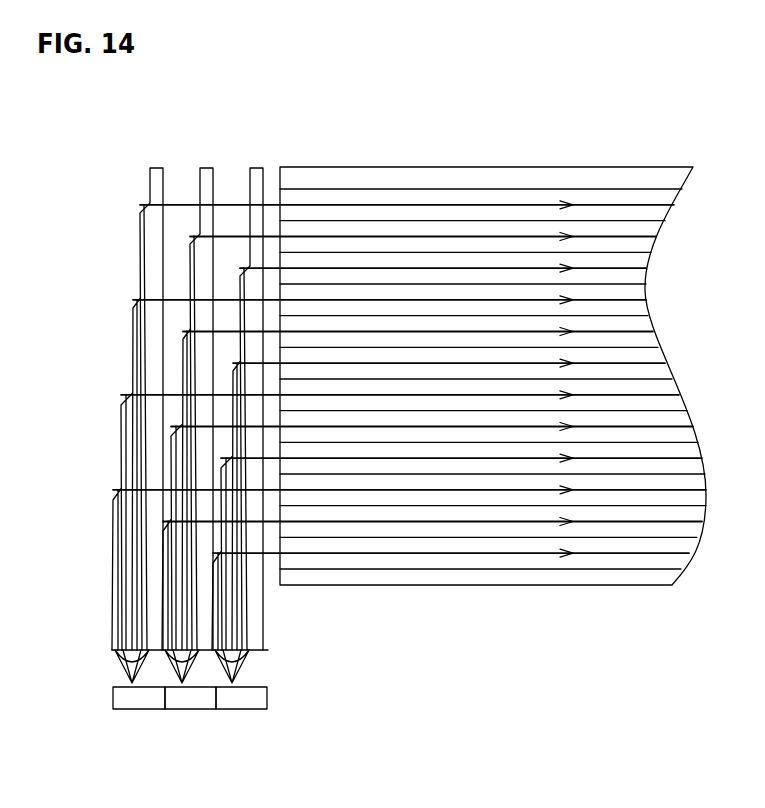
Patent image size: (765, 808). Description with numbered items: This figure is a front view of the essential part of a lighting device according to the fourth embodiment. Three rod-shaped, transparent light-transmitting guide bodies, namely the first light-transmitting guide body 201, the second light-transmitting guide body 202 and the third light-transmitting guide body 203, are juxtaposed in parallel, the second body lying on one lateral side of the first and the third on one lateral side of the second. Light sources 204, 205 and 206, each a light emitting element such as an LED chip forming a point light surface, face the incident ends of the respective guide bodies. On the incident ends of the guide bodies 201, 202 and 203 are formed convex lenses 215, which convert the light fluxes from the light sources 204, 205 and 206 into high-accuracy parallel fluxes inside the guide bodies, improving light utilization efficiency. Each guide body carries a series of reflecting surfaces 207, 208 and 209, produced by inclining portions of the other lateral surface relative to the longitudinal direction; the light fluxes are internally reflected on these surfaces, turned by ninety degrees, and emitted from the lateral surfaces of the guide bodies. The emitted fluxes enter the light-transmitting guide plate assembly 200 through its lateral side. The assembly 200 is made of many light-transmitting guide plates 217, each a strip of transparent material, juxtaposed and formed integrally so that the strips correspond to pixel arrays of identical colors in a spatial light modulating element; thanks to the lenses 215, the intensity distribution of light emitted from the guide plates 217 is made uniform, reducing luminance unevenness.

The light-transmitting guide plate assembly 200 is at (588, 585).
The first light-transmitting guide body 201 is at (160, 167).
The second light-transmitting guide body 202 is at (207, 167).
The third light-transmitting guide body 203 is at (260, 167).
The first light source 204 is at (135, 702).
The second light source 205 is at (190, 703).
The third light source 206 is at (237, 703).
The reflecting surface 207 is at (146, 207).
The reflecting surface 208 is at (192, 240).
The reflecting surface 209 is at (244, 271).
The convex lens 215 is at (114, 657).
The light-transmitting guide plate 217 is at (335, 197).